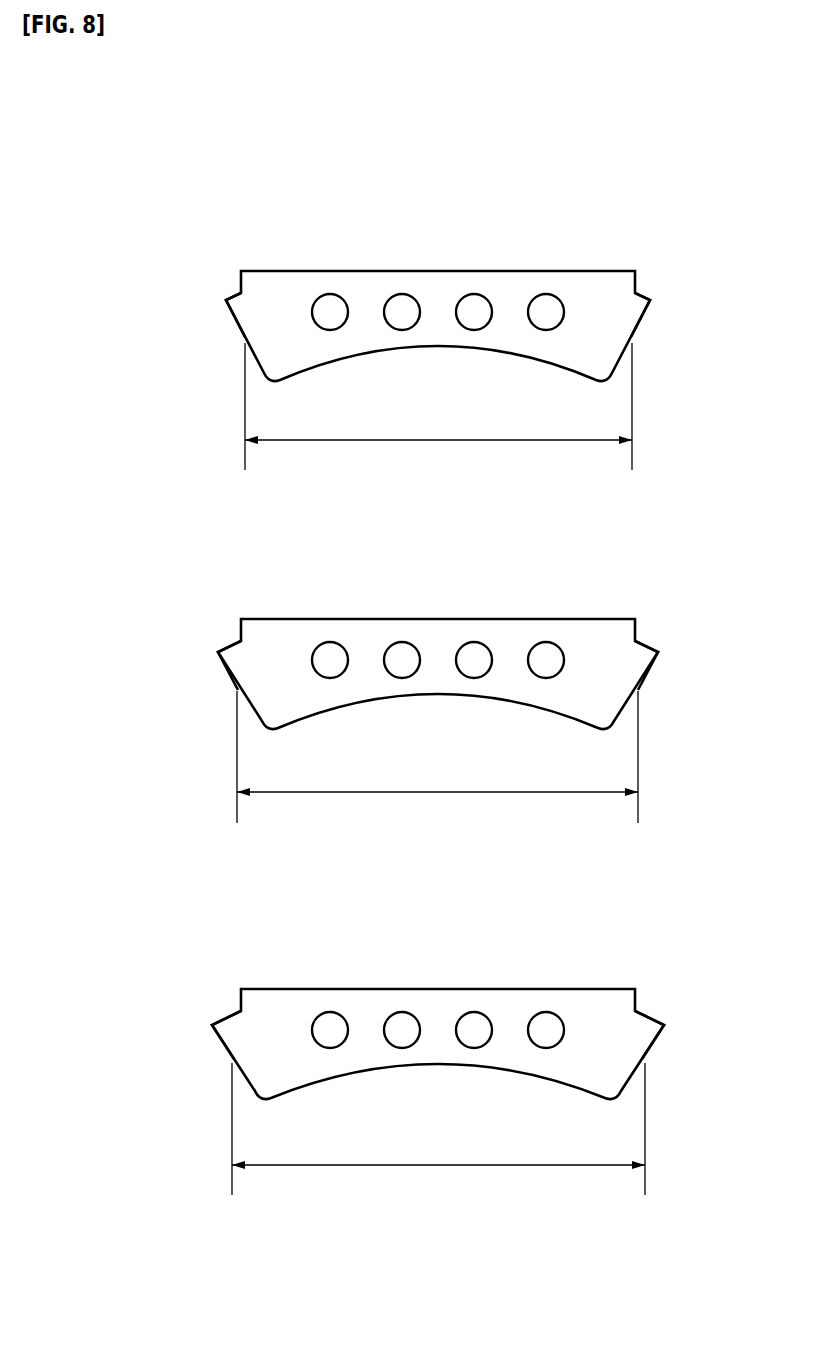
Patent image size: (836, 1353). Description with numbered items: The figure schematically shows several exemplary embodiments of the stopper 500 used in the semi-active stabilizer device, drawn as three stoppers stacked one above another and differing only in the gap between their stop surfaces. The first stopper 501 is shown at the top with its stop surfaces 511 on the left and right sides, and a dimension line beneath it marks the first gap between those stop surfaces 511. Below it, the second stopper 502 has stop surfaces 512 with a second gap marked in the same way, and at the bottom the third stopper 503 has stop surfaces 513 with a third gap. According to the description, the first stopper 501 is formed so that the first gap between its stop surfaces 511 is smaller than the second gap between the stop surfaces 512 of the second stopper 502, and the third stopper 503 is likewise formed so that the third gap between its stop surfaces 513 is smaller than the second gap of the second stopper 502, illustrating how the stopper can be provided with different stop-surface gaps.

The weight members set 500 is at (675, 119).
The first stopper 501 is at (583, 293).
The second stopper 502 is at (583, 641).
The third stopper 503 is at (583, 1011).
The stop surfaces 511 is at (237, 318).
The stop surfaces 512 is at (230, 677).
The stop surfaces 513 is at (222, 1048).